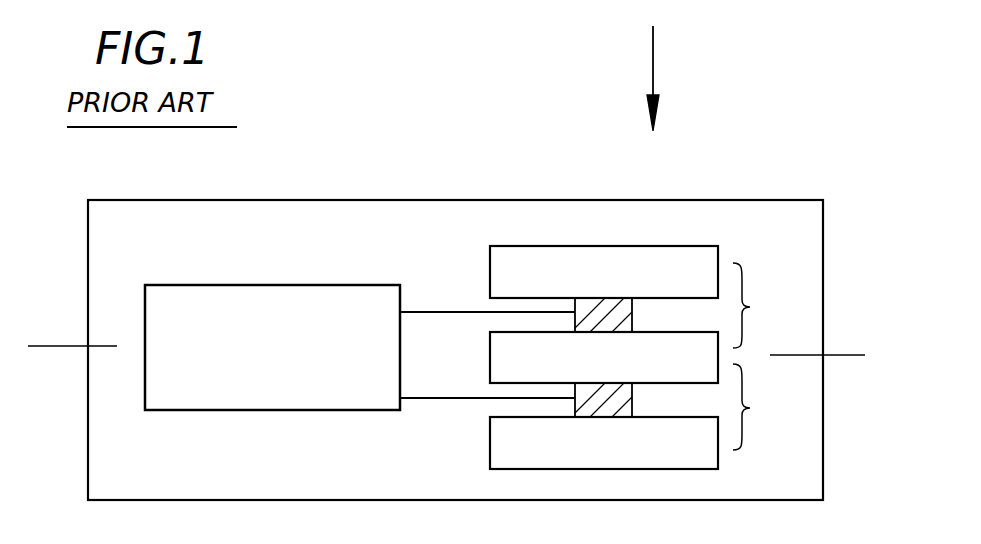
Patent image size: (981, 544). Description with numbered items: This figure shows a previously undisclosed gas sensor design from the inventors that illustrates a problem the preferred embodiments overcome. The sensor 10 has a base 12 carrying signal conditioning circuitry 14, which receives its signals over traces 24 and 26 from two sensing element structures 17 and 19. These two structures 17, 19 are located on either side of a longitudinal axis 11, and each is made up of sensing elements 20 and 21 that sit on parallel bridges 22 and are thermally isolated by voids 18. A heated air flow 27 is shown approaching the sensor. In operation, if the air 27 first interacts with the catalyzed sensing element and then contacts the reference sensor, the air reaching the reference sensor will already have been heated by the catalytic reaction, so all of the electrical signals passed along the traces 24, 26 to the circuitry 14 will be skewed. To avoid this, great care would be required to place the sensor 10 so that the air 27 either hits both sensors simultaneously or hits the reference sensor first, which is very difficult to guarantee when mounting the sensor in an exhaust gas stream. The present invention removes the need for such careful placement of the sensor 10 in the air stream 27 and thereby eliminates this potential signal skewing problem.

The sensor 10 is at (442, 120).
The longitudinal axis 11 is at (62, 346).
The base 12 is at (285, 263).
The signal conditioning circuitry 14 is at (262, 396).
The sensing element structure 17 is at (764, 305).
The voids 18 is at (497, 268).
The sensing element structure 19 is at (764, 407).
The sensing element 20 is at (620, 268).
The sensing element 21 is at (618, 403).
The parallel bridges 22 is at (677, 316).
The trace 24 is at (418, 312).
The trace 26 is at (438, 398).
The heated air flow 27 is at (655, 60).